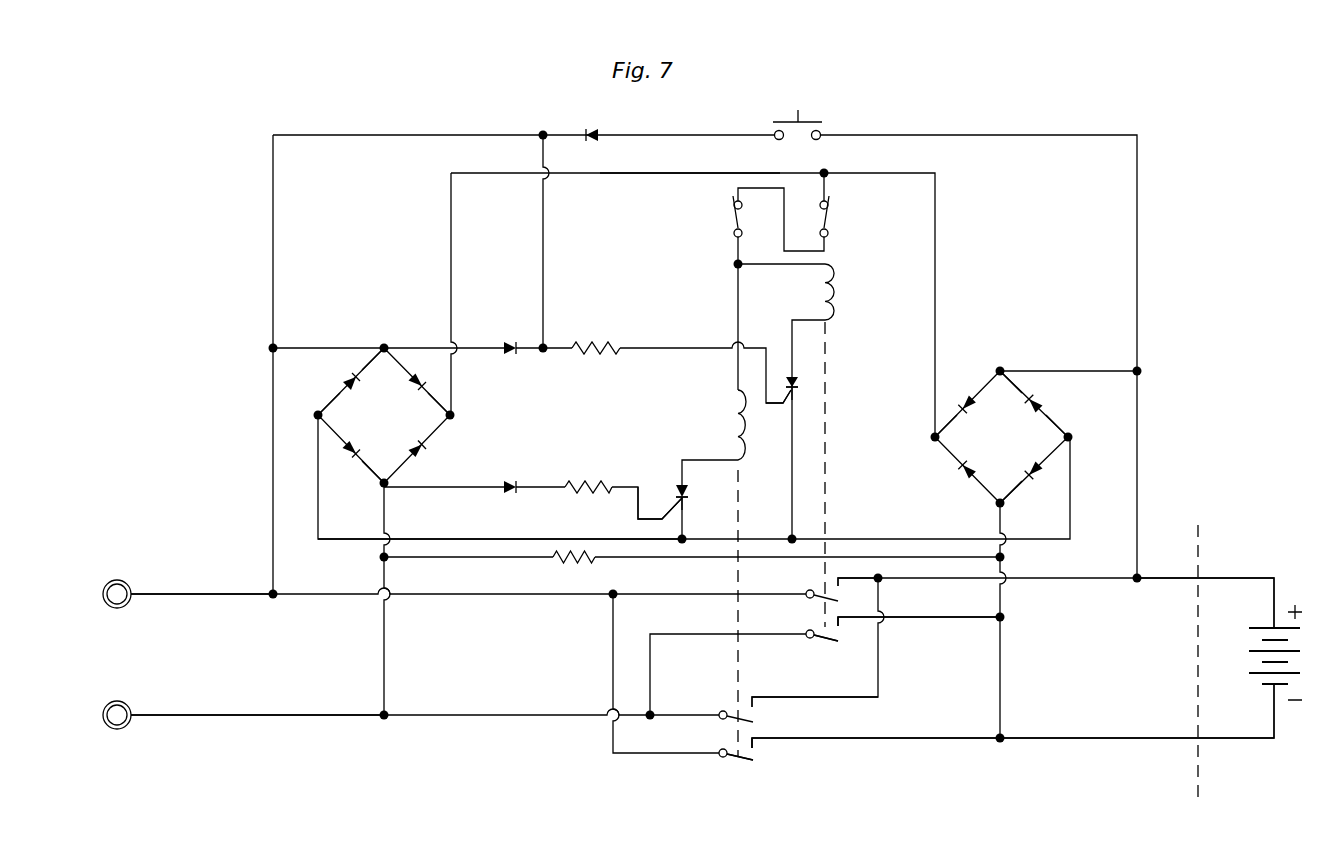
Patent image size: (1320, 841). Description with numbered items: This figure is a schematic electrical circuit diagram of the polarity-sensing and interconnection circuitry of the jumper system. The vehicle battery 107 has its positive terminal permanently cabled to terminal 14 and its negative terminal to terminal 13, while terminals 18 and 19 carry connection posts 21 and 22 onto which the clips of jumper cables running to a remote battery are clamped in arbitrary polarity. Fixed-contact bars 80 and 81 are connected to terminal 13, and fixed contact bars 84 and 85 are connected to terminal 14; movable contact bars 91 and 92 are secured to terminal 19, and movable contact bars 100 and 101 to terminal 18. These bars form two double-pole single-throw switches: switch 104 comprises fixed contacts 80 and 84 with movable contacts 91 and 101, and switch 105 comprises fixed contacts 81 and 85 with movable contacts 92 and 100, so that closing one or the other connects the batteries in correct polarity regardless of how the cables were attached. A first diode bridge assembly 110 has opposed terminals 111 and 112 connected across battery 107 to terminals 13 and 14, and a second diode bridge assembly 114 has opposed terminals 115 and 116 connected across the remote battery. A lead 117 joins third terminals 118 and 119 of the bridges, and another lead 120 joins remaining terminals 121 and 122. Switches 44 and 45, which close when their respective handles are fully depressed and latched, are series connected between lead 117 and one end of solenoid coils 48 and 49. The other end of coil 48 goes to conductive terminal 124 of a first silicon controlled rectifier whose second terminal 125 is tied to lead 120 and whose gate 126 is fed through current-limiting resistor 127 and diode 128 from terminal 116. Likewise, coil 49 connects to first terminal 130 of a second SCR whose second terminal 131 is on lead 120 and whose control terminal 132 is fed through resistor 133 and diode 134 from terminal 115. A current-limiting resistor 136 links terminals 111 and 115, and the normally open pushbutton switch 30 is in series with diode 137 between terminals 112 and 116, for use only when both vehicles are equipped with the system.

The heavy metal terminal 13 is at (1230, 738).
The heavy metal terminal 14 is at (1245, 578).
The heavy metal terminal 18 is at (192, 713).
The heavy metal terminal 19 is at (222, 597).
The connection post 21 is at (117, 729).
The connection post 22 is at (131, 590).
The pushbutton switch 30 is at (801, 118).
The SPST switch 44 is at (829, 213).
The SPST switch 45 is at (735, 213).
The solenoid coil 48 is at (833, 285).
The solenoid coil 49 is at (737, 415).
The fixed-contact bar 80 is at (925, 618).
The fixed-contact bar 81 is at (808, 738).
The fixed contact bar 84 is at (923, 579).
The fixed contact bar 85 is at (808, 697).
The movable contact bar 91 is at (822, 640).
The movable contact bar 92 is at (734, 720).
The movable contact bar 100 is at (741, 758).
The movable contact bar 101 is at (822, 599).
The double-pole single-throw switch 104 is at (856, 650).
The double-pole single-throw switch 105 is at (766, 766).
The battery 107 is at (1297, 655).
The first diode bridge assembly 110 is at (945, 477).
The bridge terminal 111 is at (1003, 503).
The bridge terminal 112 is at (1000, 370).
The second diode bridge assembly 114 is at (464, 427).
The bridge terminal 115 is at (383, 486).
The bridge terminal 116 is at (386, 346).
The lead 117 is at (685, 173).
The third bridge terminal 118 is at (933, 437).
The third bridge terminal 119 is at (452, 415).
The lead 120 is at (522, 538).
The remaining bridge terminal 121 is at (1069, 437).
The remaining bridge terminal 122 is at (319, 413).
The conductive terminal of SCR 124 is at (798, 376).
The second conductive terminal of SCR 125 is at (797, 389).
The control terminal (gate) 126 is at (783, 403).
The current-limiting resistor 127 is at (598, 348).
The diode 128 is at (509, 346).
The first conductive terminal of second SCR 130 is at (679, 485).
The second conductive terminal of second SCR 131 is at (685, 499).
The control terminal of second SCR 132 is at (645, 518).
The resistor 133 is at (592, 485).
The diode 134 is at (511, 481).
The current-limiting resistor 136 is at (553, 560).
The diode 137 is at (587, 129).